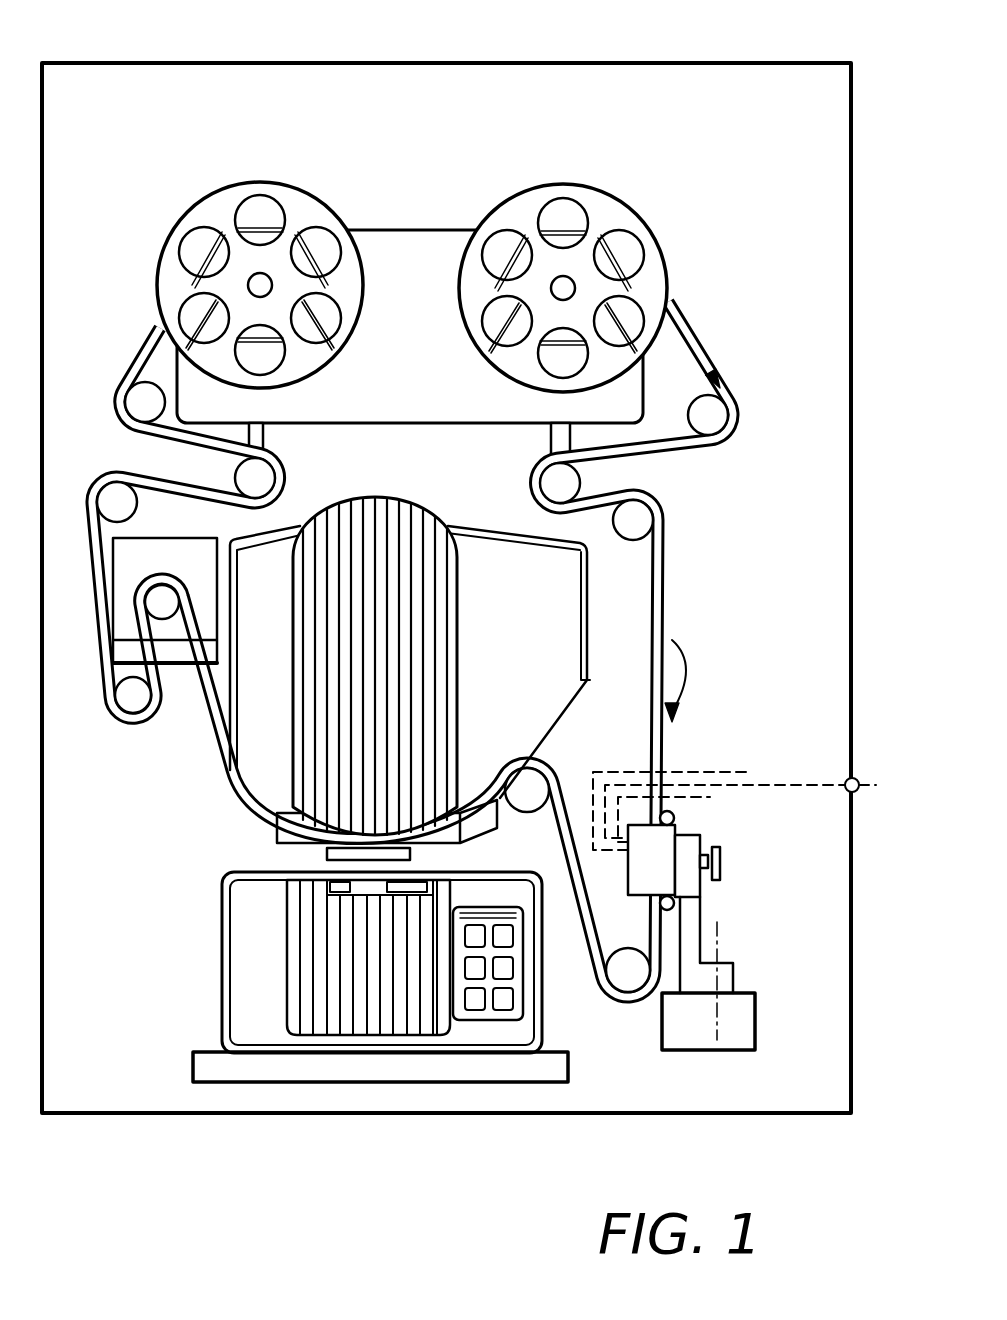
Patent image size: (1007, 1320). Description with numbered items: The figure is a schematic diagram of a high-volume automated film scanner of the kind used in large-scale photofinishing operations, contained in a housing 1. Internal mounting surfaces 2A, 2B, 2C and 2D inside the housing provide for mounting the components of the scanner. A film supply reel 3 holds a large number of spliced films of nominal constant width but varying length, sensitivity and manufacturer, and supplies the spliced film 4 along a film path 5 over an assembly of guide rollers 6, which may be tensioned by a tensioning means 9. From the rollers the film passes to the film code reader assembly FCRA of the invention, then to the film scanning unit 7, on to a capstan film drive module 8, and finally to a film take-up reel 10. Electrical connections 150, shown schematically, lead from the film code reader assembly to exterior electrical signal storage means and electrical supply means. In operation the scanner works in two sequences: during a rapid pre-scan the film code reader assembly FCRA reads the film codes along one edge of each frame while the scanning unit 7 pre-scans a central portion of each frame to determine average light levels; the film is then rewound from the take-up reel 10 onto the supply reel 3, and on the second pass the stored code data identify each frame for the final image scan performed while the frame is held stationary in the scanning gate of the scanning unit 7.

The housing 1 is at (483, 62).
The internal mounting surface 2A is at (422, 203).
The internal mounting surface 2B is at (757, 1008).
The internal mounting surface 2C is at (193, 1058).
The internal mounting surface 2D is at (178, 665).
The film supply reel 3 is at (655, 232).
The spliced film 4 is at (677, 340).
The film path 5 is at (722, 346).
The rollers 6 is at (643, 517).
The scanning unit 7 is at (422, 780).
The capstan film drive module 8 is at (115, 598).
The tensioning means 9 is at (268, 433).
The film take-up reel 10 is at (185, 208).
The electrical connections 150 is at (708, 790).
The film code reader assembly FCRA is at (722, 890).